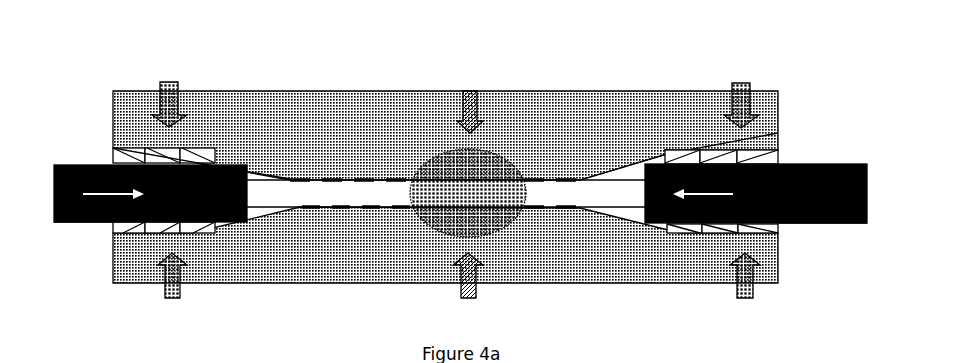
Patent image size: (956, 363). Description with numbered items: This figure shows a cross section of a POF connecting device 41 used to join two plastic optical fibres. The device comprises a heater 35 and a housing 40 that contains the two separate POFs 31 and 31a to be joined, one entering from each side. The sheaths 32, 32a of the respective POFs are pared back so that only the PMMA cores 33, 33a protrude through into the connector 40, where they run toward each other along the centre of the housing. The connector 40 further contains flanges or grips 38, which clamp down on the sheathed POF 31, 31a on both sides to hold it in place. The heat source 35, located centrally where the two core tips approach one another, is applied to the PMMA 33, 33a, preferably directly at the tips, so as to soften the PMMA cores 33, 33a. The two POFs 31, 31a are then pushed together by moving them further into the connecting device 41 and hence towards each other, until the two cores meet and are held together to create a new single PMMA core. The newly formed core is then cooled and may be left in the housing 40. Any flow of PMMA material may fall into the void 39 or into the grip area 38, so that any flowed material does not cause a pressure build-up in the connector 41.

The POF 31 is at (88, 243).
The POF 31a is at (855, 233).
The sheath 32 is at (72, 223).
The sheath 32a is at (848, 163).
The PMMA core 33 is at (305, 193).
The PMMA core 33a is at (565, 193).
The heater 35 is at (452, 152).
The flanges or grips 38 is at (138, 157).
The void 39 is at (630, 173).
The housing 40 is at (297, 232).
The POF connecting device 41 is at (336, 72).